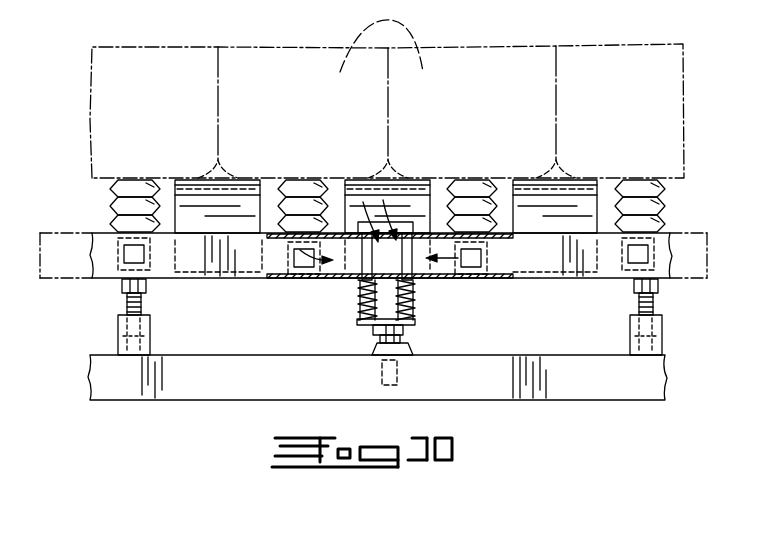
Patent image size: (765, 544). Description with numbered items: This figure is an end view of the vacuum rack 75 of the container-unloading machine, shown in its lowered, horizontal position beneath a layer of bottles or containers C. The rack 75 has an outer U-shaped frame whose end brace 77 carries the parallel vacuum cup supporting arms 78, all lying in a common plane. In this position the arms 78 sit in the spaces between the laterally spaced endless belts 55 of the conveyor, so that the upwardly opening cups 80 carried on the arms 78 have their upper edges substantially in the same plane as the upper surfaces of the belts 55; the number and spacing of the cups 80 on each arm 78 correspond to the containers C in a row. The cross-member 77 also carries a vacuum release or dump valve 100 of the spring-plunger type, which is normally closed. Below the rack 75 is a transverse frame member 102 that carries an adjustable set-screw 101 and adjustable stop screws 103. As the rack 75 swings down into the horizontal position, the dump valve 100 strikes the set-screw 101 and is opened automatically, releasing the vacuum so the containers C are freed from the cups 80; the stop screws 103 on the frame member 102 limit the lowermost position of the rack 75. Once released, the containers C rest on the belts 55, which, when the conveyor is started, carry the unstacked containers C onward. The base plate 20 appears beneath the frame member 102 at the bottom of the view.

The base plate 20 is at (440, 386).
The endless belts 55 is at (250, 179).
The rack 75 is at (100, 277).
The end brace 77 is at (195, 263).
The vacuum cup supporting arms 78 is at (110, 246).
The cups 80 is at (316, 179).
The vacuum release or dump valve 100 is at (358, 262).
The adjustable set-screw 101 is at (412, 333).
The transverse frame member 102 is at (532, 355).
The adjustable stop screws 103 is at (142, 304).
The containers C is at (387, 94).